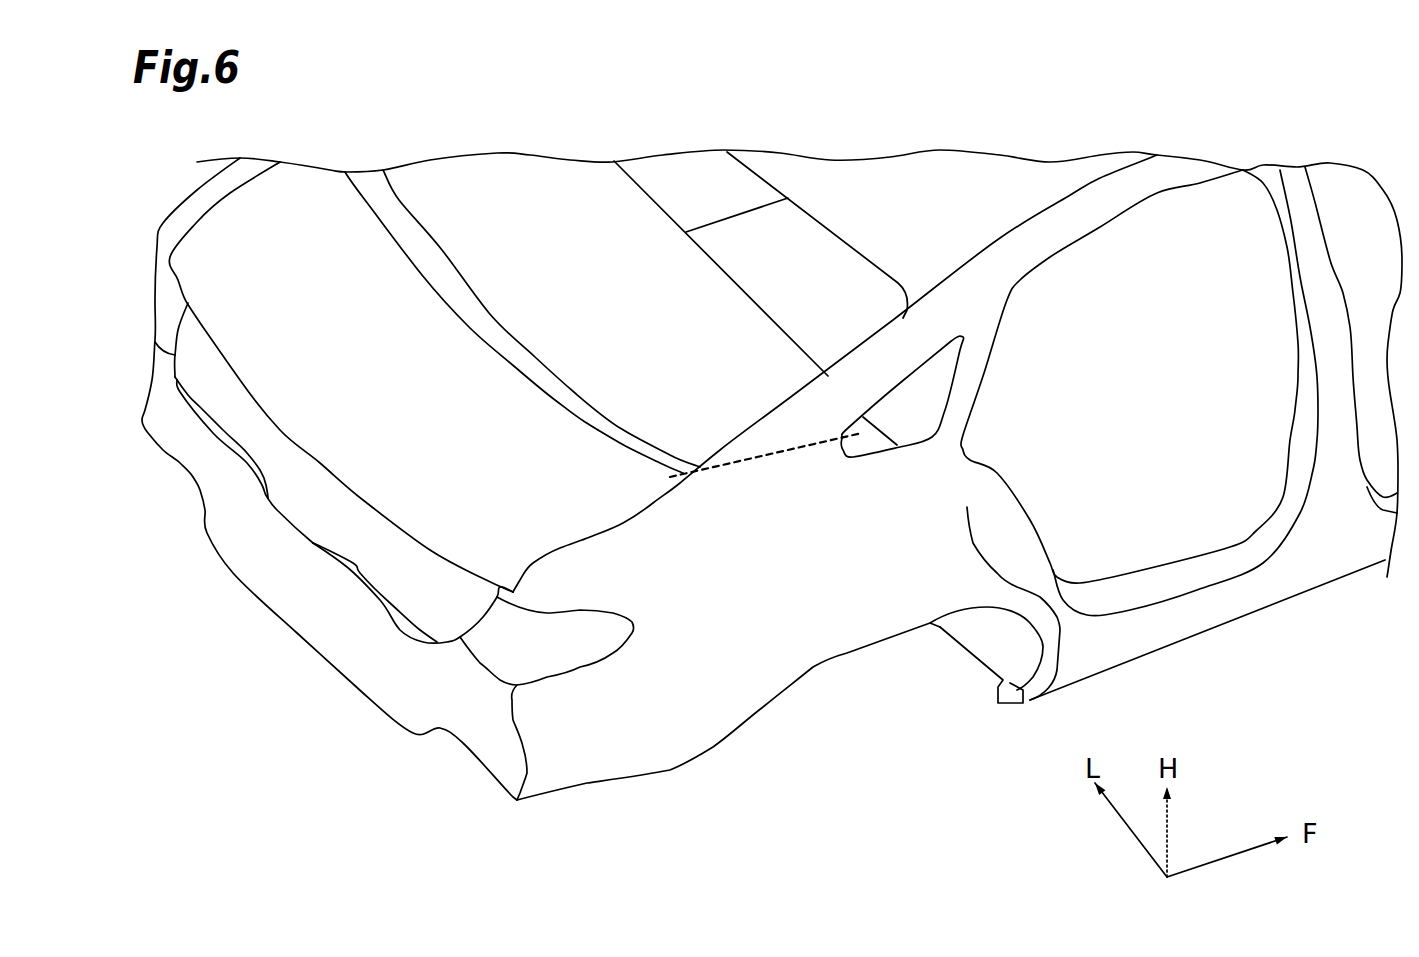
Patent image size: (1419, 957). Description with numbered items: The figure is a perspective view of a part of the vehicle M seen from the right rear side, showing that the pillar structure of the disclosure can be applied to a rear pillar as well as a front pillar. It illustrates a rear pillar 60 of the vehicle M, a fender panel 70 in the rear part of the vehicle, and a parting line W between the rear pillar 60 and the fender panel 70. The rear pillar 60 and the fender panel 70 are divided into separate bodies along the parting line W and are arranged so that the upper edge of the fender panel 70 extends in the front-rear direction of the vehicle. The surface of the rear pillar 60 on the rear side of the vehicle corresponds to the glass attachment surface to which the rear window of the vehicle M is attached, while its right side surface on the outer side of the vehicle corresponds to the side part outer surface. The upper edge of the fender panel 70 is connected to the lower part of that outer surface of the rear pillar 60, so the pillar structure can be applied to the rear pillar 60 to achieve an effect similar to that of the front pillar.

The vehicle M is at (928, 180).
The rear pillar 60 is at (853, 337).
The fender panel 70 is at (772, 660).
The parting line W is at (777, 463).